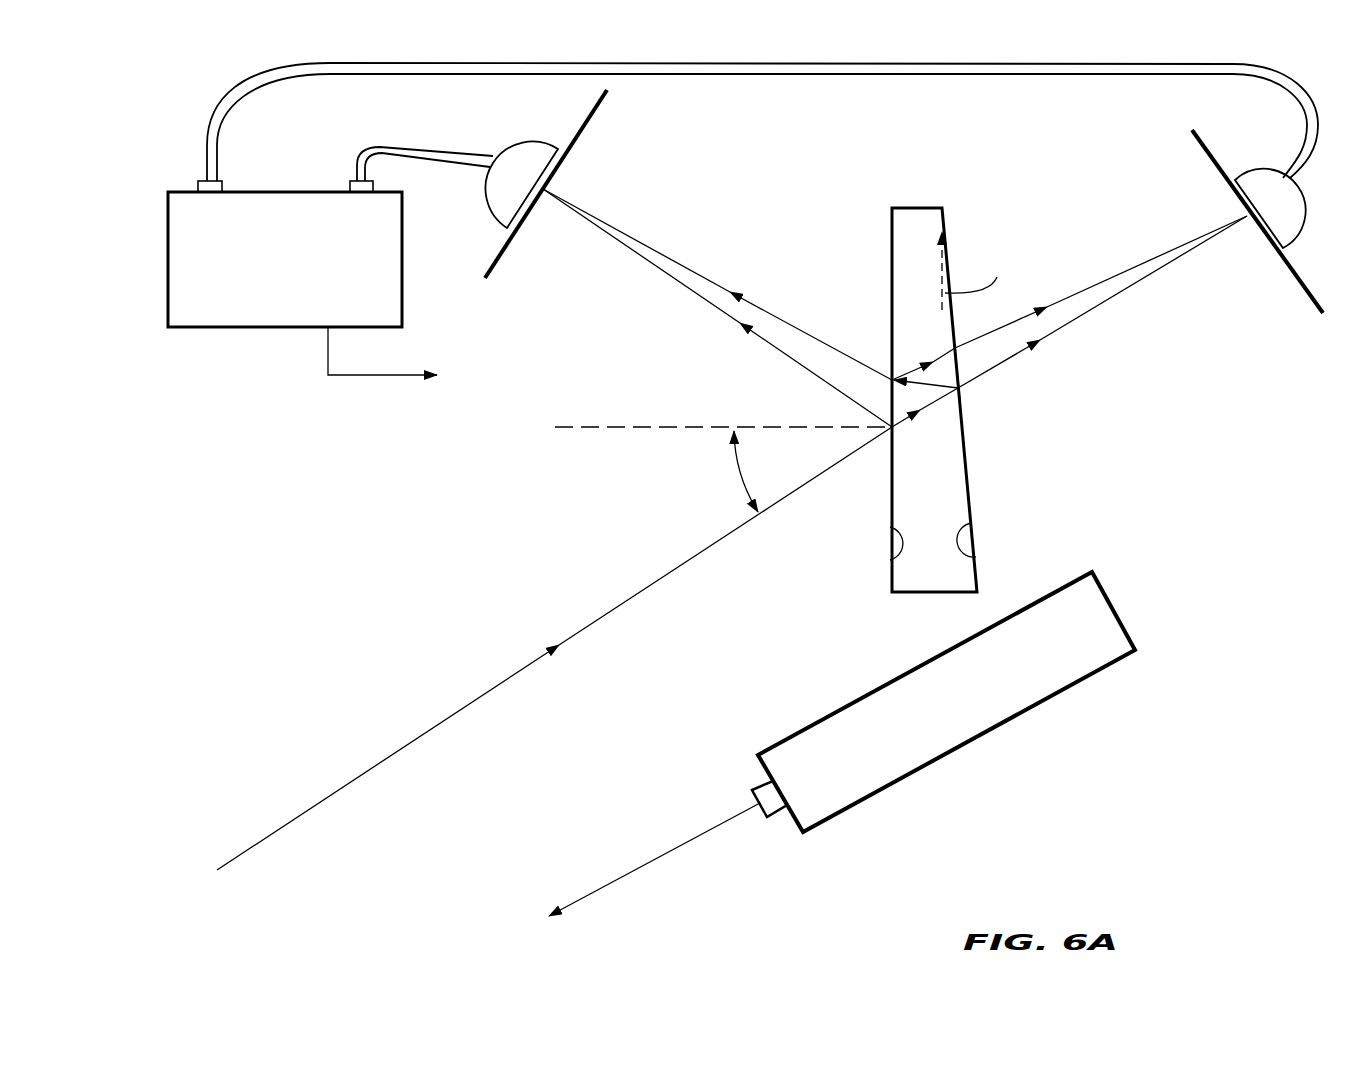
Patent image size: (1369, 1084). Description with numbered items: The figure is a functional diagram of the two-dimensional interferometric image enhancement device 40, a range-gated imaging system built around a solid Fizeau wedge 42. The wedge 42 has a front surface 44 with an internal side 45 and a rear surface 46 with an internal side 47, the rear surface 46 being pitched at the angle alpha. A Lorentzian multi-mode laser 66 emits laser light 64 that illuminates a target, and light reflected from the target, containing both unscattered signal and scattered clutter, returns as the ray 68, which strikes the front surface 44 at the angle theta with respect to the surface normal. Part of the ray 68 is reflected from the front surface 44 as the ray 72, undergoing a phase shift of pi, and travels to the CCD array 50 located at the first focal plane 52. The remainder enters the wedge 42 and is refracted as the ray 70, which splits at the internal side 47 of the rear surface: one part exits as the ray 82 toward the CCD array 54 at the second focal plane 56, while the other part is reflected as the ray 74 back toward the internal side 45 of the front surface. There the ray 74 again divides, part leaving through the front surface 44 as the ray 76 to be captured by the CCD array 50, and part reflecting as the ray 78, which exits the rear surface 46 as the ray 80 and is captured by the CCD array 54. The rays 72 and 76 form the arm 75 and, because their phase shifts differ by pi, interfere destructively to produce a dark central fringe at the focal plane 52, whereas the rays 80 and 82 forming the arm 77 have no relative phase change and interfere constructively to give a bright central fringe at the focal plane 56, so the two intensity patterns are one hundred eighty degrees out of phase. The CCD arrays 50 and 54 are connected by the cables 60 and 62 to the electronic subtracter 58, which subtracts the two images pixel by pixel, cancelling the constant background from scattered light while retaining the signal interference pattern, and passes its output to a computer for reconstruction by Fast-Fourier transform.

The device 40 is at (477, 504).
The Fizeau wedge 42 is at (923, 595).
The front surface 44 is at (888, 498).
The internal side of the front surface 45 is at (890, 553).
The rear surface 46 is at (968, 492).
The internal side of the rear surface 47 is at (982, 555).
The CCD array 50 is at (497, 203).
The first focal plane 52 is at (500, 262).
The CCD array 54 is at (1272, 178).
The second focal plane 56 is at (1300, 287).
The electronic subtracter 58 is at (250, 328).
The cable 60 is at (748, 74).
The cable 62 is at (420, 146).
The laser light 64 is at (707, 827).
The Lorentzian multi-mode laser 66 is at (980, 735).
The ray 68 is at (451, 716).
The ray 70 is at (905, 418).
The ray 72 is at (770, 347).
The ray 74 is at (930, 387).
The arm 75 is at (663, 308).
The ray 76 is at (710, 277).
The arm 77 is at (920, 207).
The ray 78 is at (920, 365).
The ray 80 is at (1053, 305).
The ray 82 is at (1082, 317).